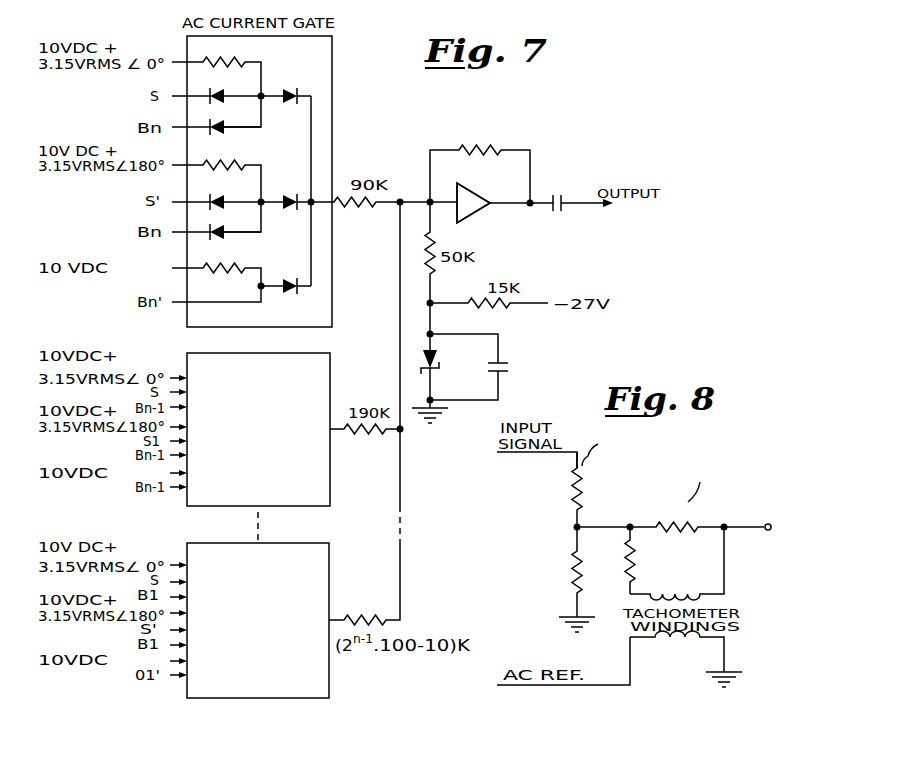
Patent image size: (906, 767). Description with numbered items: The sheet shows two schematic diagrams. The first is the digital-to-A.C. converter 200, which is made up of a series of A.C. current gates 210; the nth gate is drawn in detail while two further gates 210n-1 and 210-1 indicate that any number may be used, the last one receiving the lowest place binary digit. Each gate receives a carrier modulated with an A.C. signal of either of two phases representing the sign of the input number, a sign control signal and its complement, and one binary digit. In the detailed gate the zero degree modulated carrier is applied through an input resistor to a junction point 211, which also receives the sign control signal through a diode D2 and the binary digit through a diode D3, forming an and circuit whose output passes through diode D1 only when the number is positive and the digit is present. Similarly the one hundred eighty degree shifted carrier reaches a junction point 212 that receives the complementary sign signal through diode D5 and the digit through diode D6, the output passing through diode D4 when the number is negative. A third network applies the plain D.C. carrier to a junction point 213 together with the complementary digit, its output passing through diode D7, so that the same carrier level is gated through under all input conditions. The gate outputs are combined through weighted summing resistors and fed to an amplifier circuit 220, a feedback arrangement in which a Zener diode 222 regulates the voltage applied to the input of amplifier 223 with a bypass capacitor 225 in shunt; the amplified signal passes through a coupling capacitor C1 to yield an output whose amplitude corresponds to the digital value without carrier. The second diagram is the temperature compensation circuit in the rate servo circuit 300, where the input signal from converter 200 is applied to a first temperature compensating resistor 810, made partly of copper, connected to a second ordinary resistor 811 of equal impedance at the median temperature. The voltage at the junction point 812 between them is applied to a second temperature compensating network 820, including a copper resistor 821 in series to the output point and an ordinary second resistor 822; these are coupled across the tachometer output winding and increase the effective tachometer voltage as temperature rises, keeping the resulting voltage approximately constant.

In FIG. 7, the A.C. current gate 210 is at (277, 181).
In FIG. 7, the A.C. current gate 210n-1 is at (328, 377).
In FIG. 7, the A.C. current gate 210-1 is at (328, 567).
In FIG. 7, the junction point 211 is at (263, 95).
In FIG. 7, the junction point 212 is at (263, 200).
In FIG. 7, the junction point 213 is at (263, 284).
In FIG. 7, the amplifier circuit 220 is at (491, 164).
In FIG. 7, the Zener diode 222 is at (436, 359).
In FIG. 7, the amplifier 223 is at (476, 196).
In FIG. 7, the bypass capacitor 225 is at (529, 371).
In FIG. 7, the converter 200 is at (245, 735).
In FIG. 7, the diode D1 is at (292, 103).
In FIG. 7, the diode D2 is at (219, 93).
In FIG. 7, the diode D3 is at (215, 126).
In FIG. 7, the diode D4 is at (292, 209).
In FIG. 7, the diode D5 is at (219, 197).
In FIG. 7, the diode D6 is at (215, 230).
In FIG. 7, the diode D7 is at (292, 295).
In FIG. 7, the coupling capacitor C1 is at (580, 192).
In FIG. 8, the first temperature compensating resistor 810 is at (572, 500).
In FIG. 8, the second ordinary resistor 811 is at (571, 572).
In FIG. 8, the junction point 812 is at (585, 527).
In FIG. 8, the second temperature compensating network 820 is at (782, 587).
In FIG. 8, the copper resistor 821 is at (698, 538).
In FIG. 8, the second resistor 822 is at (626, 568).
In FIG. 8, the rate servo circuit 300 is at (644, 728).